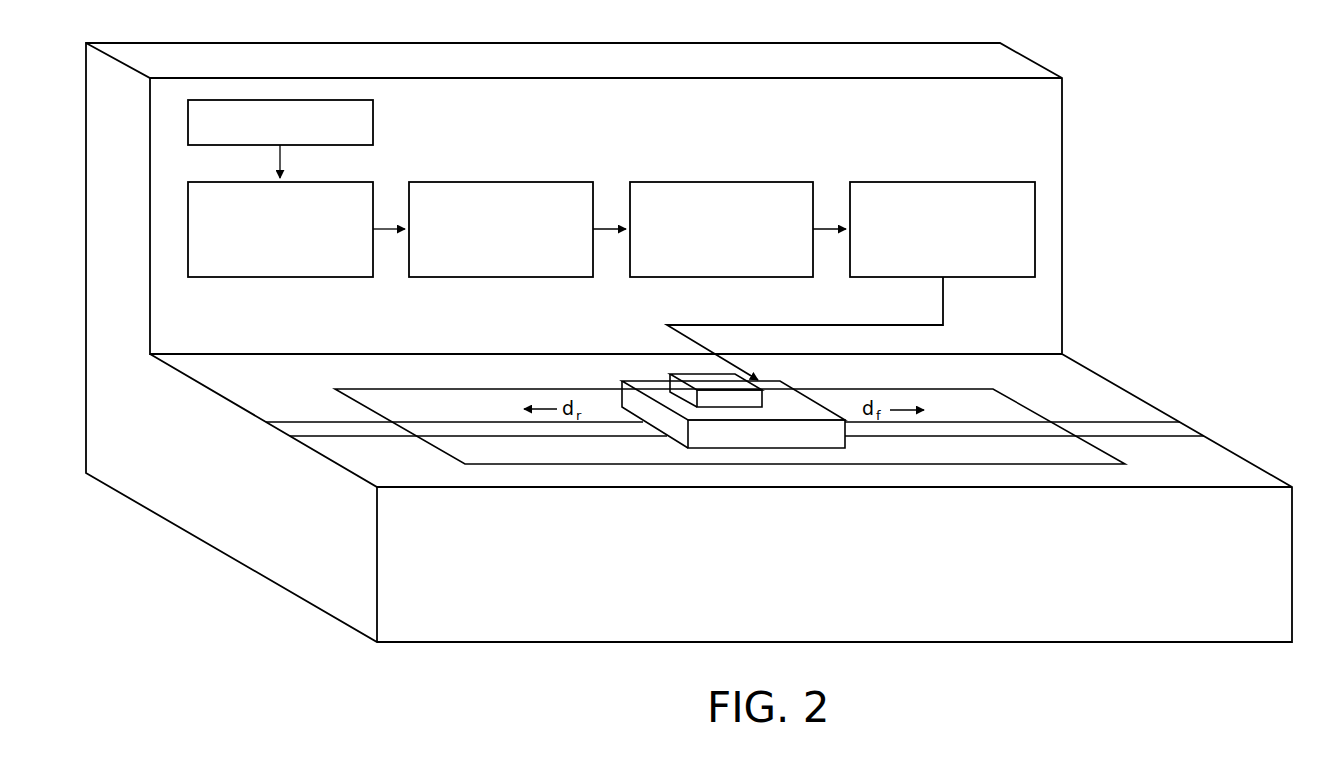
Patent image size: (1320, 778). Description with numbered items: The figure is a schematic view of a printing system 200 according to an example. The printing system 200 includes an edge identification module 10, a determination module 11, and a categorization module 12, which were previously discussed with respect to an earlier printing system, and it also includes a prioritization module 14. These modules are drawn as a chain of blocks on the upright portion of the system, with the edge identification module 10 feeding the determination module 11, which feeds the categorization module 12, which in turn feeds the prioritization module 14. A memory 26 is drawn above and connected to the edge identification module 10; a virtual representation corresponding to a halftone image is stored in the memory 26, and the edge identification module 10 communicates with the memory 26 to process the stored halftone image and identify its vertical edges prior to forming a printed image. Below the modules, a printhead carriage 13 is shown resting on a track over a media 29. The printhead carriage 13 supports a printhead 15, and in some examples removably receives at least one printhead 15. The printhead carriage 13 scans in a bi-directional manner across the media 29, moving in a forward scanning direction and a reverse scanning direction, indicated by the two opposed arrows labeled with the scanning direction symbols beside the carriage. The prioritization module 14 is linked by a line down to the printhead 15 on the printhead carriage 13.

The printing system 200 is at (1112, 42).
The memory 26 is at (360, 127).
The edge identification module 10 is at (217, 190).
The determination module 11 is at (440, 190).
The categorization module 12 is at (660, 190).
The prioritization module 14 is at (881, 190).
The media 29 is at (978, 402).
The printhead carriage 13 is at (647, 385).
The printhead 15 is at (688, 374).